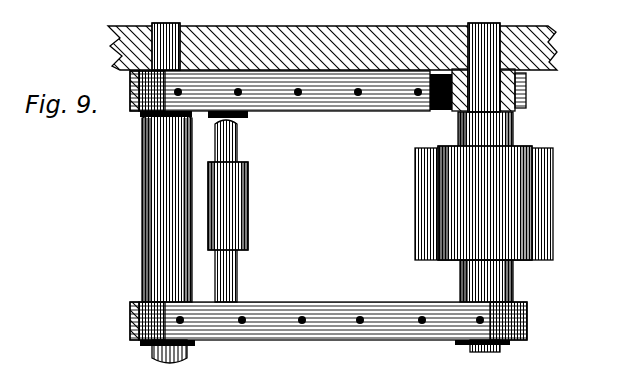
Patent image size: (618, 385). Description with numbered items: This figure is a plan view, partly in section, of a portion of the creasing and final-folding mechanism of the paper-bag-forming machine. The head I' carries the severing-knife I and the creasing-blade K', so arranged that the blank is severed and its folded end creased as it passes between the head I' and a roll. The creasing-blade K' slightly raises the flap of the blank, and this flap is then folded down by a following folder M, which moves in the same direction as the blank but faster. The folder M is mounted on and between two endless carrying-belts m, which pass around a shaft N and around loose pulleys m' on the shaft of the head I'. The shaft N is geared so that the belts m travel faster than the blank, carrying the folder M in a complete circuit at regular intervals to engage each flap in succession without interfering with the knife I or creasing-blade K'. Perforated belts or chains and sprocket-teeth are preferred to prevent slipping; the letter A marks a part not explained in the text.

The shaft N is at (150, 206).
The following folder M is at (237, 210).
The endless carrying-belt m is at (328, 211).
The loose pulley m' is at (516, 215).
The severing-knife I is at (473, 204).
The creasing-blade K' is at (508, 203).
The head I' is at (507, 281).
The frame A is at (7, 345).